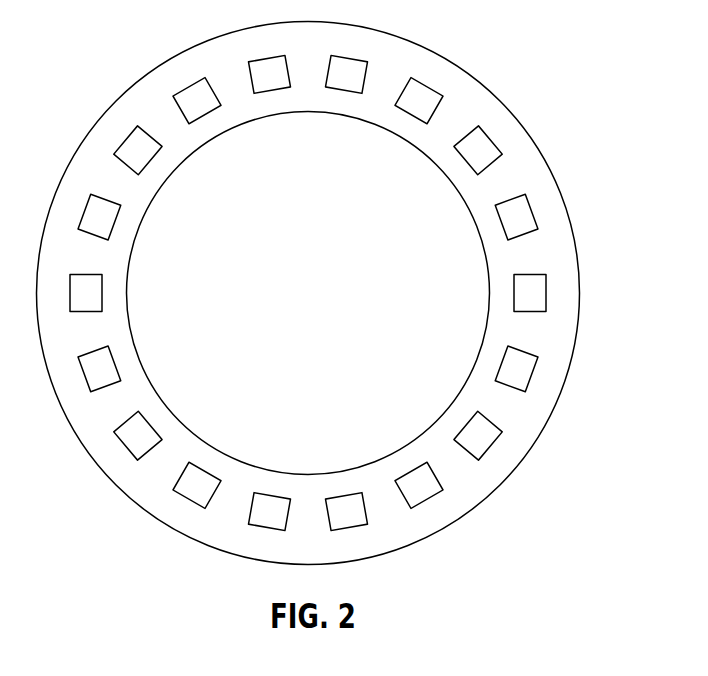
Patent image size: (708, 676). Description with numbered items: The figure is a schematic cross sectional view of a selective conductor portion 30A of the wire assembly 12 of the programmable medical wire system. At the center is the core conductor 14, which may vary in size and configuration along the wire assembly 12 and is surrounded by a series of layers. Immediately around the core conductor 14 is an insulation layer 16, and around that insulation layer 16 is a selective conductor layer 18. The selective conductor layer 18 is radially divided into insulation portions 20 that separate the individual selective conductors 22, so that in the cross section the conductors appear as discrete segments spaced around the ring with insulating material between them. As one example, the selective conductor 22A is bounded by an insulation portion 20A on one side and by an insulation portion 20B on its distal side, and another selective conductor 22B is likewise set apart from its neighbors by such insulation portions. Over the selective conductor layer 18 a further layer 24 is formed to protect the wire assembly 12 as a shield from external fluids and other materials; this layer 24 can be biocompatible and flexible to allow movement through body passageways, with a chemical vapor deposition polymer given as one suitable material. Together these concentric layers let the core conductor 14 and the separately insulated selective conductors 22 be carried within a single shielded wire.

The wire assembly 12 is at (123, 93).
The core conductor 14 is at (205, 367).
The insulation layer 16 is at (428, 153).
The selective conductor layer 18 is at (432, 502).
The insulation portions 20 is at (458, 462).
The insulation portion 20A is at (531, 335).
The insulation portion 20B is at (549, 245).
The selective conductors 22 is at (485, 422).
The selective conductor 22A is at (531, 290).
The selective conductor 22B is at (188, 98).
The further layer 24 is at (559, 192).
The selective conductor portion 30A is at (572, 63).